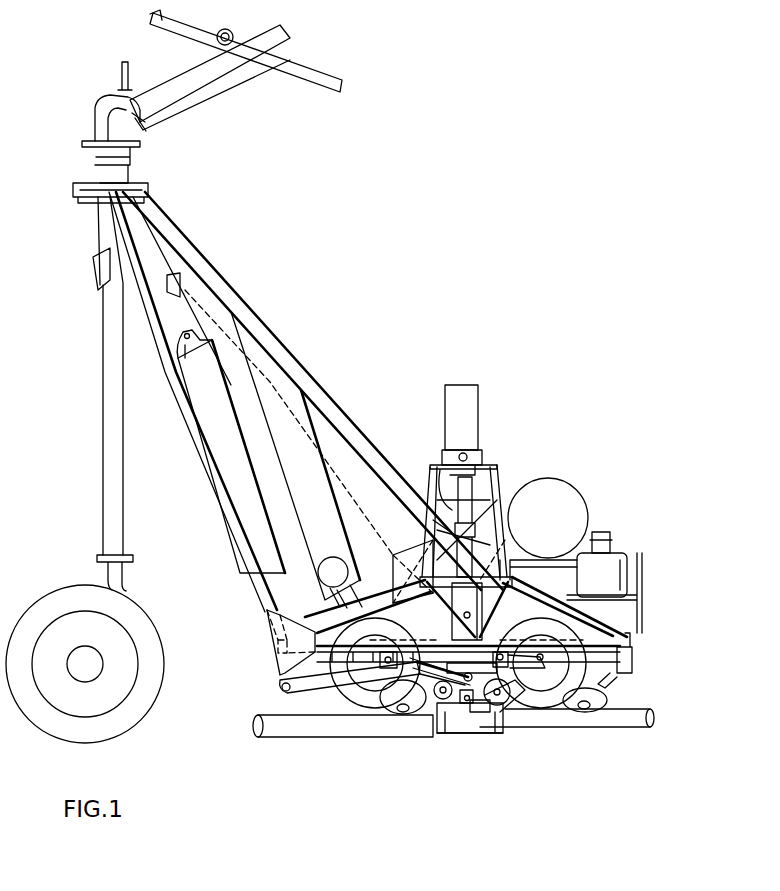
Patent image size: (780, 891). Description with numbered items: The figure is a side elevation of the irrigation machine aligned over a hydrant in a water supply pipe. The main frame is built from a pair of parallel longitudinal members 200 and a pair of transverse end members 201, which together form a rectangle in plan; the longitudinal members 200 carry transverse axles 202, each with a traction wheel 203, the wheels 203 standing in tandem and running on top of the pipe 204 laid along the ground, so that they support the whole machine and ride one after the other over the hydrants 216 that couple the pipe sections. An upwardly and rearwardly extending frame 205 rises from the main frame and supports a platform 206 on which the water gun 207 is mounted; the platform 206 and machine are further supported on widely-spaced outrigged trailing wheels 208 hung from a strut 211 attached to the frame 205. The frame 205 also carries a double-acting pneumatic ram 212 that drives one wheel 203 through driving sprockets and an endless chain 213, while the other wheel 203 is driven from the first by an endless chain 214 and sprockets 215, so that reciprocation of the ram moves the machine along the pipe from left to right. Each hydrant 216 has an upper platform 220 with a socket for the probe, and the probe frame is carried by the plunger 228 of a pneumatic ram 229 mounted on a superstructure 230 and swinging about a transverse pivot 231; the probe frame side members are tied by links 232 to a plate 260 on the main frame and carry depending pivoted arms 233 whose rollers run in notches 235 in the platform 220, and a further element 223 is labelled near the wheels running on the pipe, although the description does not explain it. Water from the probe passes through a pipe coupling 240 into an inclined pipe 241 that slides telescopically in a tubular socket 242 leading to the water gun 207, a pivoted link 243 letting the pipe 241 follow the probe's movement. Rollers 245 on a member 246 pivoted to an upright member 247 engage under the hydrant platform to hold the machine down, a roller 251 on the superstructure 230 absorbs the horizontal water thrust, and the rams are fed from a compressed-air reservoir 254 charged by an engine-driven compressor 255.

The longitudinal members 200 is at (347, 617).
The transverse end members 201 is at (280, 648).
The transverse axles 202 is at (385, 675).
The wheels 203 is at (622, 562).
The pipe 204 is at (258, 728).
The frame 205 is at (188, 435).
The platform 206 is at (143, 186).
The water gun 207 is at (187, 95).
The outrigged trailing wheels 208 is at (131, 618).
The strut 211 is at (112, 376).
The double-acting pneumatic ram 212 is at (252, 452).
The endless chain 213 is at (360, 584).
The endless chain 214 is at (532, 572).
The sprockets 215 is at (275, 683).
The hydrants 216 is at (440, 735).
The upper platform 220 is at (430, 705).
The roller 223 is at (387, 710).
The plunger 228 is at (462, 495).
The pneumatic ram 229 is at (470, 412).
The superstructure 230 is at (507, 483).
The transverse pivot 231 is at (478, 448).
The link 232 is at (328, 680).
The pivoted arms 233 is at (538, 658).
The notches 235 is at (477, 733).
The pipe coupling 240 is at (488, 500).
The inclined pipe 241 is at (320, 418).
The tubular socket 242 is at (192, 268).
The pivoted link 243 is at (437, 500).
The rollers 245 is at (414, 700).
The member 246 is at (498, 718).
The upright member 247 is at (448, 735).
The roller 251 is at (492, 560).
The reservoir 254 is at (574, 502).
The compressor 255 is at (606, 570).
The plate 260 is at (285, 663).